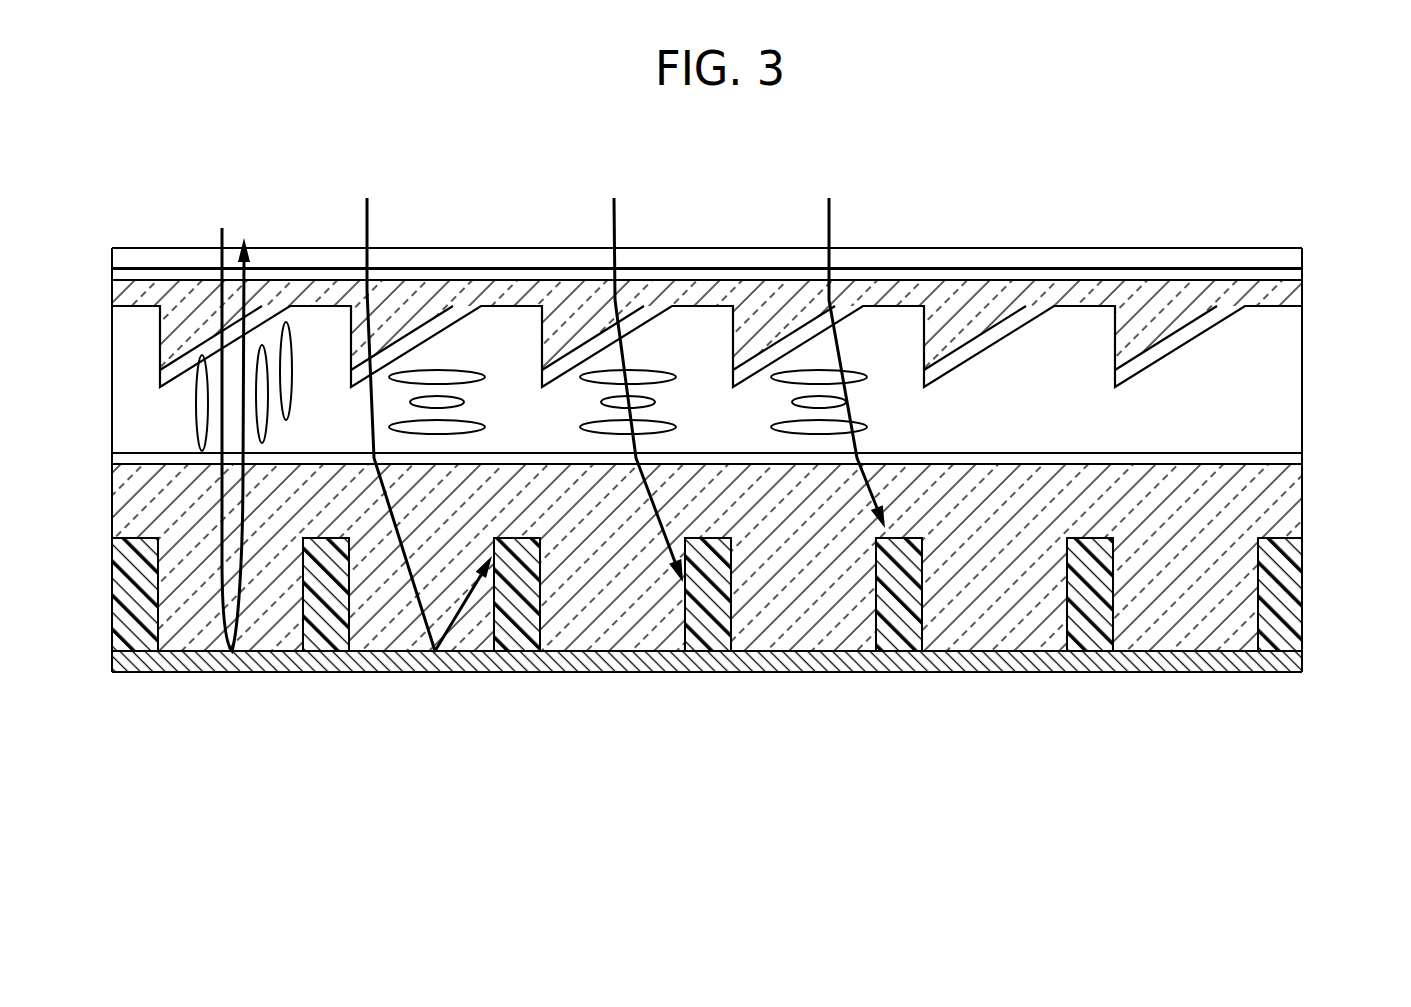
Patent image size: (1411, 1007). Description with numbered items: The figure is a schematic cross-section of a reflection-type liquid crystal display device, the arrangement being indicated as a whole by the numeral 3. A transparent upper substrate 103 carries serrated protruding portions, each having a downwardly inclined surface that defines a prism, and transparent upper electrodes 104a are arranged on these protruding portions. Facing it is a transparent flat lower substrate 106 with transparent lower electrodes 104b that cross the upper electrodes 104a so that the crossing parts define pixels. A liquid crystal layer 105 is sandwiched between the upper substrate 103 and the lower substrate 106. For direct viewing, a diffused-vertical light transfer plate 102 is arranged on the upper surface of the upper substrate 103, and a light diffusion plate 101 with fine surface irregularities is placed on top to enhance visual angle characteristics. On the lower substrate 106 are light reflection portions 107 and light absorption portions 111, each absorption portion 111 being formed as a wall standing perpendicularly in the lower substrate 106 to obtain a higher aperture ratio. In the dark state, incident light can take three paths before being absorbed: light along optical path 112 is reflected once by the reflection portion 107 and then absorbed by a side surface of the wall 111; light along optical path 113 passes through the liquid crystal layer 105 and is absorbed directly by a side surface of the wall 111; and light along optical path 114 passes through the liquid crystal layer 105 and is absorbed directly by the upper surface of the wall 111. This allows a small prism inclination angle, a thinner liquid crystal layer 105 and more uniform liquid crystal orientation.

The liquid crystal display device 3 is at (1062, 186).
The light diffusion plate 101 is at (1287, 260).
The diffused-vertical light transfer plate 102 is at (1287, 273).
The upper substrate 103 is at (1287, 294).
The upper electrodes 104a is at (1195, 328).
The lower electrodes 104b is at (1287, 462).
The liquid crystal layer 105 is at (1287, 420).
The lower substrate 106 is at (1285, 507).
The light reflection portion 107 is at (643, 662).
The light absorption portion 111 is at (1285, 590).
The optical path 112 is at (367, 218).
The optical path 113 is at (615, 218).
The optical path 114 is at (829, 218).